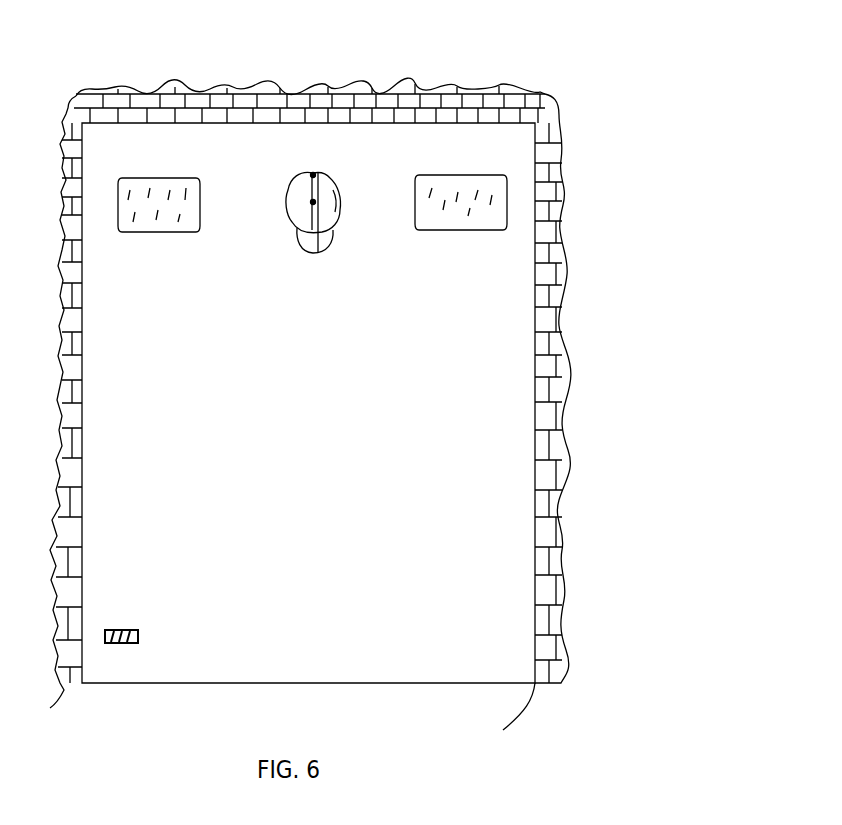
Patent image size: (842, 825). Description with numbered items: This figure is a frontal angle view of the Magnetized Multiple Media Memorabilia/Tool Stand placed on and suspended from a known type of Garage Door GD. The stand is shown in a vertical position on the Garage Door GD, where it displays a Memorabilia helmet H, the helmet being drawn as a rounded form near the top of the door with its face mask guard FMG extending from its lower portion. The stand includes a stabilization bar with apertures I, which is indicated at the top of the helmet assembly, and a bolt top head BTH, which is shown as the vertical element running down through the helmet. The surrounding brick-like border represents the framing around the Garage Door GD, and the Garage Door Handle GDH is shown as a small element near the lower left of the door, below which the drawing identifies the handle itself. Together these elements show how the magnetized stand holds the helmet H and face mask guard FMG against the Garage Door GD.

The stabilization bar with apertures I is at (313, 175).
The bolt top head BTH is at (312, 175).
The memorabilia helmet H is at (333, 193).
The face mask guard FMG is at (335, 243).
The garage door GD is at (520, 337).
The garage door handle GDH is at (120, 643).